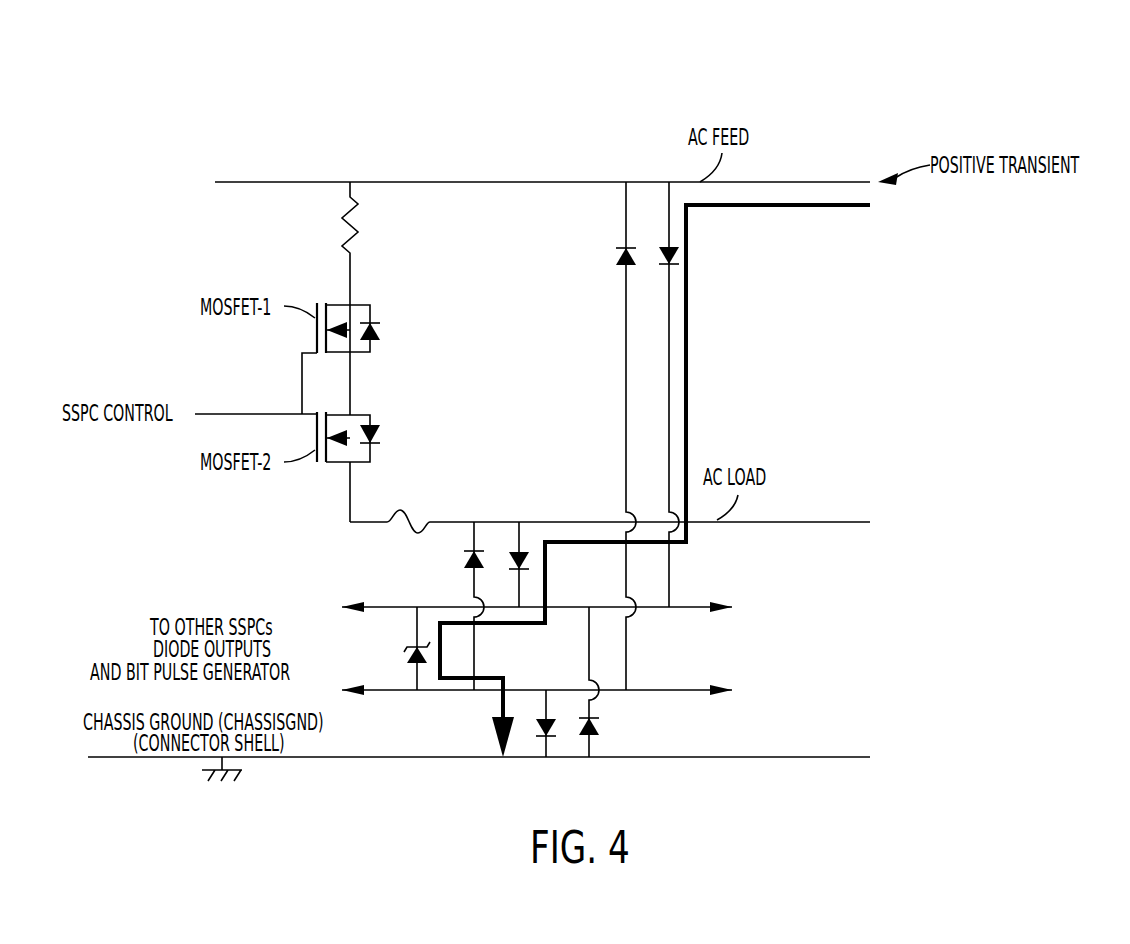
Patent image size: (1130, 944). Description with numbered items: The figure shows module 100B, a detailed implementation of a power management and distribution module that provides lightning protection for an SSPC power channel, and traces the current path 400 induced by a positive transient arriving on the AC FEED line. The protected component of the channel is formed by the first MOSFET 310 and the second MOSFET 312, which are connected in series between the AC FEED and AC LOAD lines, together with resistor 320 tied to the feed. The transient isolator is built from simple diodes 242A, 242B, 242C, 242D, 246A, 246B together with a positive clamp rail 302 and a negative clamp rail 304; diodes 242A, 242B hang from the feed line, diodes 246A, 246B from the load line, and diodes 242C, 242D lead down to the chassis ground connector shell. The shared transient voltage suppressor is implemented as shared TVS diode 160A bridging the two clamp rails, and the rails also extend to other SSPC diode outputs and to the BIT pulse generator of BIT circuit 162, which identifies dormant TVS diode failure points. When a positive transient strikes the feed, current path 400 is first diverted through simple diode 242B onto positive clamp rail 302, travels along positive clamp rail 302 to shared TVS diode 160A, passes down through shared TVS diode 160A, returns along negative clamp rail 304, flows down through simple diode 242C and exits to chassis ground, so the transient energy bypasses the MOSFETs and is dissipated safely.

The module 100B is at (615, 96).
The resistor 320 is at (360, 233).
The MOSFET-1 310 is at (378, 346).
The MOSFET-2 312 is at (375, 428).
The simple diode 242A is at (619, 258).
The simple diode 242B is at (678, 256).
The simple diode 242C is at (552, 738).
The simple diode 242D is at (603, 733).
The current path 400 is at (807, 207).
The simple diode 246A is at (467, 562).
The simple diode 246B is at (528, 555).
The shared TVS diode 160A is at (410, 655).
The positive clamp rail 302 is at (782, 585).
The negative clamp rail 304 is at (782, 668).
The BIT circuit 162 is at (347, 684).